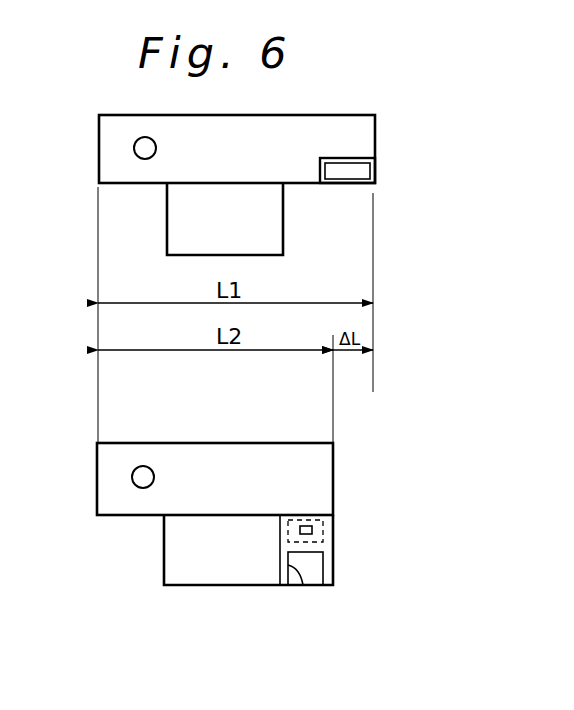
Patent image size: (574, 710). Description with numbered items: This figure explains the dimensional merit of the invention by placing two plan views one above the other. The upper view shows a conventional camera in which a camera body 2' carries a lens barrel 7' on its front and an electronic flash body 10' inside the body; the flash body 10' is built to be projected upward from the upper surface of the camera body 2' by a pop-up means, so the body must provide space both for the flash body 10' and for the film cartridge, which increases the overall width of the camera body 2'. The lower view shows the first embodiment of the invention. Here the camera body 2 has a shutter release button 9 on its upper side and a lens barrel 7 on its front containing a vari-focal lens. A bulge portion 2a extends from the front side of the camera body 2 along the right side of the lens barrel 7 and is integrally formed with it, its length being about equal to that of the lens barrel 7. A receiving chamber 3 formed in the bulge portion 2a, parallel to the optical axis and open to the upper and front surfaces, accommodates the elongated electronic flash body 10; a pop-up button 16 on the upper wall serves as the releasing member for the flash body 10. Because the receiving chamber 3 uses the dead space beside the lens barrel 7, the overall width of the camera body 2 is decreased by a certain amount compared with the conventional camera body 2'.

The camera body 2' is at (259, 148).
The lens barrel 7' is at (244, 219).
The electronic flash body 10' is at (368, 171).
The camera body 2 is at (231, 479).
The bulge portion 2a is at (335, 575).
The shutter release button 9 is at (137, 472).
The lens barrel 7 is at (228, 550).
The pop-up button 16 is at (310, 532).
The electronic flash body 10 is at (333, 564).
The receiving chamber 3 is at (303, 585).